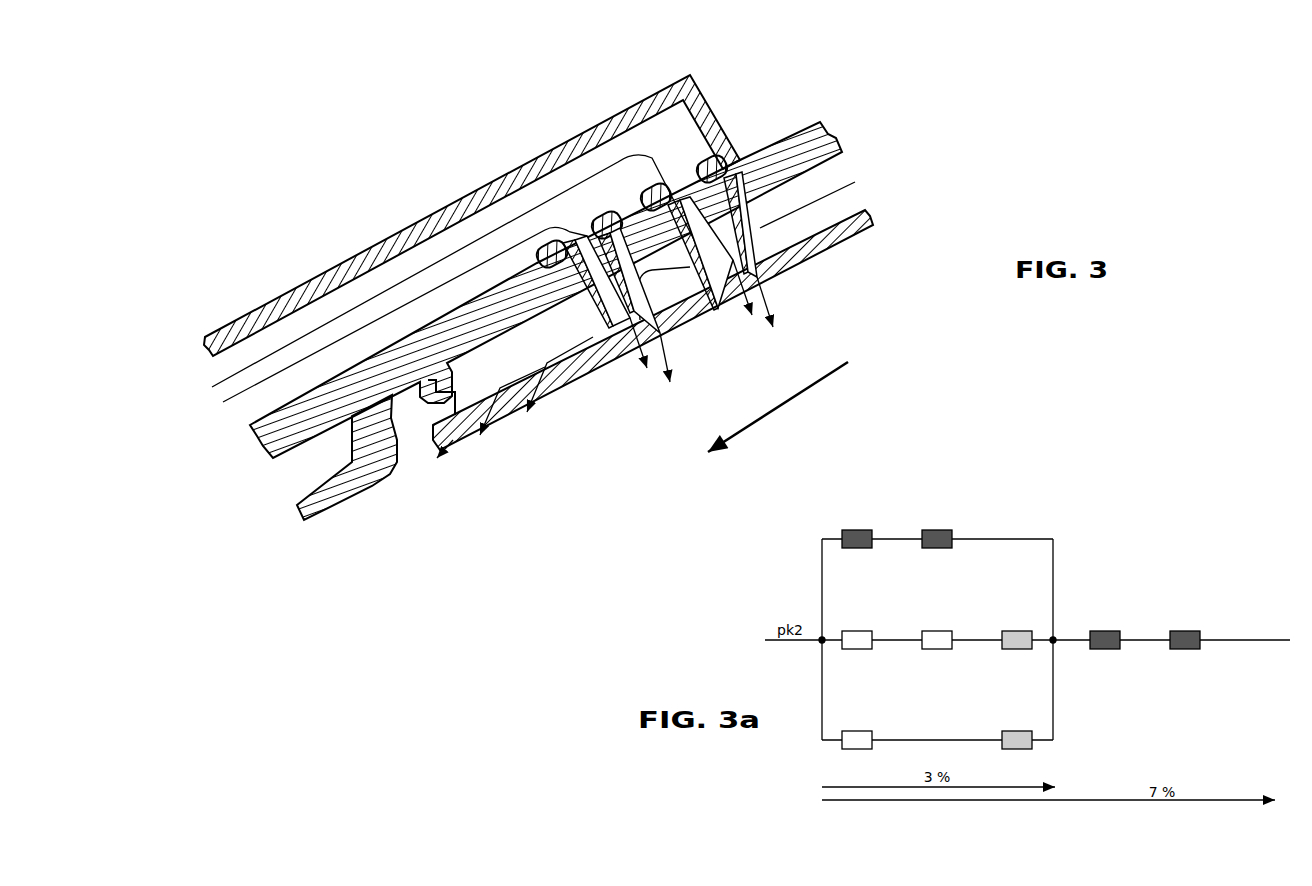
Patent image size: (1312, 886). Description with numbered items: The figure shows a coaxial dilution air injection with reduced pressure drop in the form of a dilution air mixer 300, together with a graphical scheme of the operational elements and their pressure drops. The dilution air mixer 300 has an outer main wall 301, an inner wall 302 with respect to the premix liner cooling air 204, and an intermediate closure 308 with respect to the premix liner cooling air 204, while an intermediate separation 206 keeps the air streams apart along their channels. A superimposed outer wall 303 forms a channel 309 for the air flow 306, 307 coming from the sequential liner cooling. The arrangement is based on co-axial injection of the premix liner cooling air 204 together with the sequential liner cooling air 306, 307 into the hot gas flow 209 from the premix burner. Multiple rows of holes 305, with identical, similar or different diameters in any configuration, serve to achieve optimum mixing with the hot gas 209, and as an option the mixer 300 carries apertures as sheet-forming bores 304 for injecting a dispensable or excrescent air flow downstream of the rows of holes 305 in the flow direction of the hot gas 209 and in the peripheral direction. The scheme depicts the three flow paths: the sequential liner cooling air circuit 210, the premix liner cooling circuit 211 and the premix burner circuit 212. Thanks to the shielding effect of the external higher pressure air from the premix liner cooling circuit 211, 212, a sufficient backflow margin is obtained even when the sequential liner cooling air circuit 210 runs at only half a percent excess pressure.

In FIG. 3, the dilution air mixer 300 is at (541, 307).
In FIG. 3, the outer main wall 301 is at (797, 122).
In FIG. 3, the inner wall 302 is at (828, 232).
In FIG. 3, the superimposed outer wall 303 is at (318, 283).
In FIG. 3, the sheet-forming bores 304 is at (533, 415).
In FIG. 3, the rows of holes 305 is at (608, 307).
In FIG. 3, the air flow from the sequential liner cooling 306 is at (235, 369).
In FIG. 3, the air flow from the sequential liner cooling 307 is at (248, 392).
In FIG. 3, the intermediate closure 308 is at (842, 170).
In FIG. 3, the channel 309 is at (584, 168).
In FIG. 3, the premix liner cooling air 204 is at (853, 188).
In FIG. 3, the intermediate separation 206 is at (407, 447).
In FIG. 3, the hot gas flow from premix burner 209 is at (793, 405).
In FIG. 3A, the sequential liner cooling air circuit 210 is at (1055, 568).
In FIG. 3A, the premix liner cooling circuit 211 is at (976, 636).
In FIG. 3A, the premix burner circuit 212 is at (1055, 699).